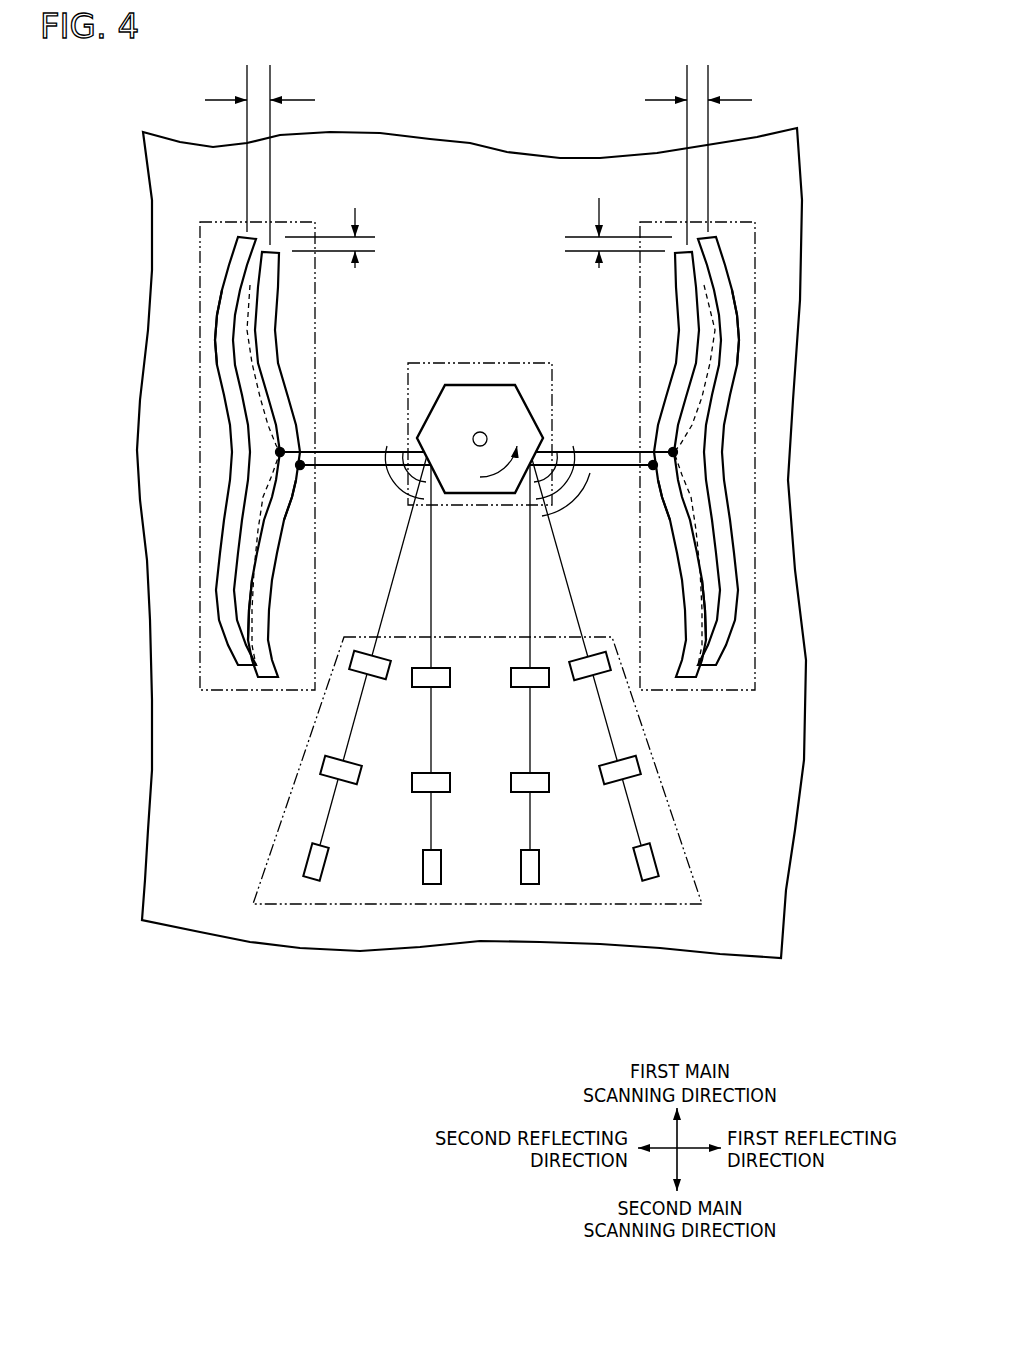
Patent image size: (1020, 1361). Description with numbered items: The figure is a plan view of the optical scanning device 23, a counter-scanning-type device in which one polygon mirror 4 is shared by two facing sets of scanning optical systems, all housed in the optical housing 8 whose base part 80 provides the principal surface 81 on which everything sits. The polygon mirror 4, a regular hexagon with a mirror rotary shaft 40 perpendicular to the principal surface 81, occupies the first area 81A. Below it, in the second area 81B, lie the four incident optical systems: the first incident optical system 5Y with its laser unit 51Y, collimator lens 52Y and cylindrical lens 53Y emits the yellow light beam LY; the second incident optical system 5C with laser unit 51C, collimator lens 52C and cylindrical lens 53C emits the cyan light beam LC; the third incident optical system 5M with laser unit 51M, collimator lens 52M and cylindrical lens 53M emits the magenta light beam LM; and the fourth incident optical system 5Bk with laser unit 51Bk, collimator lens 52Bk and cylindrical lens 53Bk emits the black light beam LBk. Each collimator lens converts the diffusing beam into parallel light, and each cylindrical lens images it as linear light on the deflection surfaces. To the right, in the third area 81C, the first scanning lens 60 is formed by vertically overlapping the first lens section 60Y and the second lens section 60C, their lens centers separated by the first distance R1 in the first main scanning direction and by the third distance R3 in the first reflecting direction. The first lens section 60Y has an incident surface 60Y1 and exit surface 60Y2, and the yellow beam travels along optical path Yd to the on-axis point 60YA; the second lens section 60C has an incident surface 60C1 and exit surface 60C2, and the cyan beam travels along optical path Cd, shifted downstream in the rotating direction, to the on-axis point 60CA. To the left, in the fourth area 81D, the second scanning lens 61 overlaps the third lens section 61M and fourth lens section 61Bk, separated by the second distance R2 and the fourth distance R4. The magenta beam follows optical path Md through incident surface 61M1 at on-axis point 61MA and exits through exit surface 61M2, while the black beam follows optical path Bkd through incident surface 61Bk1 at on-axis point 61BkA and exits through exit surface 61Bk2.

The optical housing 8 is at (476, 84).
The base part 80 is at (523, 163).
The optical scanning device 23 is at (808, 106).
The fourth distance R4 is at (258, 97).
The third distance R3 is at (695, 97).
The second distance R2 is at (372, 246).
The first distance R1 is at (590, 246).
The principal surface 81 is at (800, 832).
The first area 81A is at (427, 362).
The second area 81B is at (578, 893).
The third area 81C is at (757, 458).
The fourth area 81D is at (200, 443).
The polygon mirror 4 is at (474, 385).
The mirror rotary shaft 40 is at (487, 434).
The second scanning lens 61 is at (220, 290).
The third lens section 61M is at (218, 628).
The incident surface 61M1 is at (250, 318).
The exit surface 61M2 is at (215, 343).
The on-axis point 61MA is at (280, 450).
The fourth lens section 61Bk is at (267, 675).
The incident surface 61Bk1 is at (283, 541).
The exit surface 61Bk2 is at (250, 548).
The on-axis point 61BkA is at (301, 467).
The first scanning lens 60 is at (742, 328).
The second lens section 60C is at (737, 613).
The incident surface 60C1 is at (704, 320).
The exit surface 60C2 is at (738, 370).
The on-axis point 60CA is at (673, 450).
The first lens section 60Y is at (691, 678).
The incident surface 60Y1 is at (683, 537).
The exit surface 60Y2 is at (707, 542).
The on-axis point 60YA is at (653, 465).
The optical path Md is at (324, 452).
The optical path Bkd is at (357, 464).
The optical path Cd is at (625, 452).
The optical path Yd is at (597, 464).
The black light beam LBk is at (327, 824).
The magenta light beam LM is at (436, 832).
The cyan light beam LC is at (532, 832).
The yellow light beam LY is at (644, 838).
The fourth incident optical system 5Bk is at (333, 741).
The third incident optical system 5M is at (442, 730).
The second incident optical system 5C is at (538, 730).
The first incident optical system 5Y is at (640, 740).
The laser unit 51Bk is at (310, 870).
The laser unit 51M is at (432, 883).
The laser unit 51C is at (530, 883).
The laser unit 51Y is at (650, 877).
The collimator lens 52Bk is at (335, 775).
The collimator lens 52M is at (442, 773).
The collimator lens 52C is at (538, 773).
The collimator lens 52Y is at (634, 780).
The cylindrical lens 53Bk is at (367, 655).
The cylindrical lens 53M is at (440, 672).
The cylindrical lens 53C is at (525, 670).
The cylindrical lens 53Y is at (596, 655).